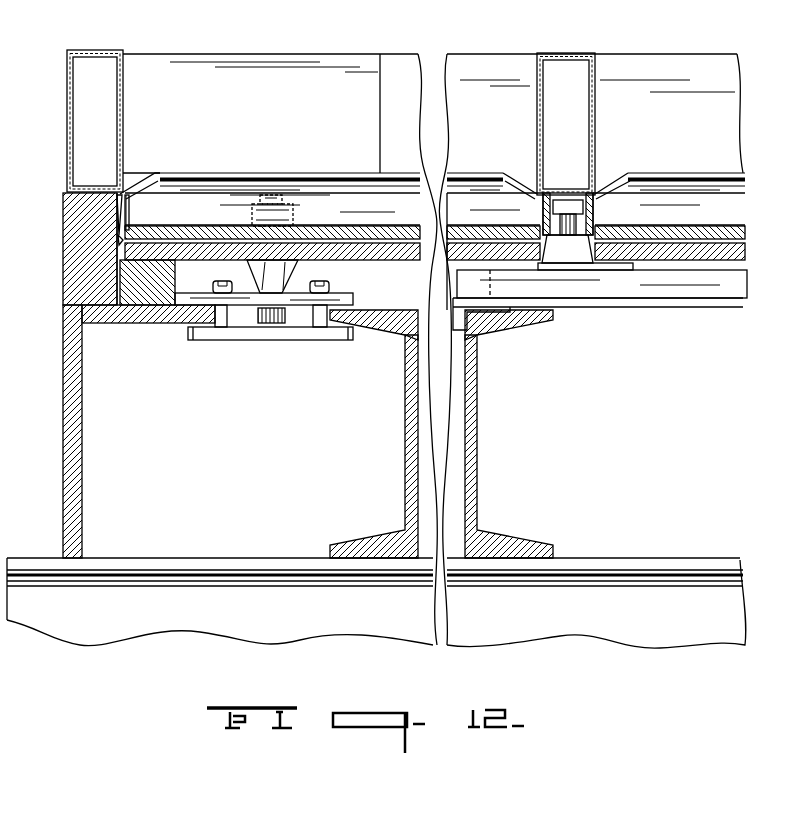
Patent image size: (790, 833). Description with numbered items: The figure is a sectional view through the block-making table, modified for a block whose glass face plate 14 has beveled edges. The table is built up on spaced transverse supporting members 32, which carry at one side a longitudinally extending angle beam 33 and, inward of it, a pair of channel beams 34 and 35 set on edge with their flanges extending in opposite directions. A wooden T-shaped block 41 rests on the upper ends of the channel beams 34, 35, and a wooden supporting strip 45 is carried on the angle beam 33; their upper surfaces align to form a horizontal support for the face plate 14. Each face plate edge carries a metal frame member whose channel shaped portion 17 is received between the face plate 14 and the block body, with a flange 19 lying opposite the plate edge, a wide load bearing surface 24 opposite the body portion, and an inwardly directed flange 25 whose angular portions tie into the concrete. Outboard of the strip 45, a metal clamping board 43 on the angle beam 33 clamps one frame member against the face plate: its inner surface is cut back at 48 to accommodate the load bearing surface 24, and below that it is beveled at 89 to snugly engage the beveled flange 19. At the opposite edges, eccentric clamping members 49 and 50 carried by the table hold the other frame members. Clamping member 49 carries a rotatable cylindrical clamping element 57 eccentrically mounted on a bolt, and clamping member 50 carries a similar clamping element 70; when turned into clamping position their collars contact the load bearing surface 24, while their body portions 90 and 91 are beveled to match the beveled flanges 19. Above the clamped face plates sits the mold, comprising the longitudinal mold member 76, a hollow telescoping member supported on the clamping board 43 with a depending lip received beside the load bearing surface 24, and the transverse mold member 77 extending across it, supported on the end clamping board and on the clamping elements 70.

The transverse mold member 77 is at (351, 55).
The longitudinal mold member 76 is at (123, 86).
The load bearing surface 24 is at (175, 203).
The inwardly directed flange 25 is at (261, 177).
The flange 19 is at (162, 250).
The face plate 14 is at (396, 240).
The channel shaped portion 17 is at (130, 224).
The cut back portion 48 is at (117, 225).
The beveled surface 89 is at (120, 238).
The clamping board 43 is at (75, 270).
The wooden supporting strip 45 is at (120, 324).
The angle beam 33 is at (72, 416).
The clamping element 70 is at (296, 222).
The body portion 91 is at (284, 272).
The eccentric clamping member 50 is at (279, 340).
The T-shaped block 41 is at (355, 330).
The channel beam 34 is at (405, 432).
The channel beam 35 is at (477, 434).
The eccentric clamping member 49 is at (692, 290).
The body portion 90 is at (568, 250).
The clamping element 57 is at (597, 226).
The transverse supporting member 32 is at (638, 568).